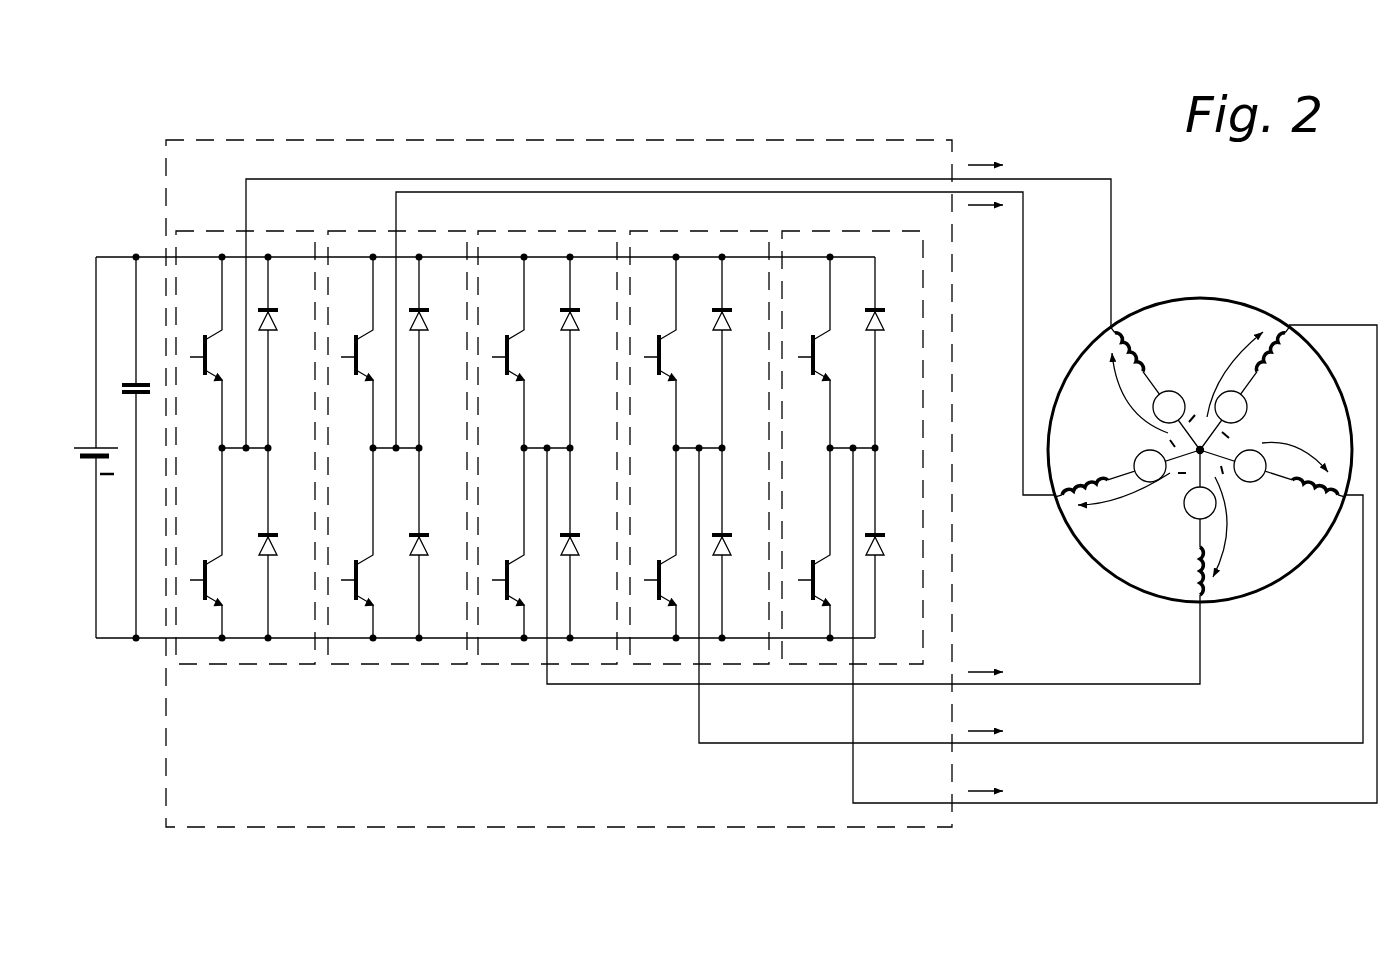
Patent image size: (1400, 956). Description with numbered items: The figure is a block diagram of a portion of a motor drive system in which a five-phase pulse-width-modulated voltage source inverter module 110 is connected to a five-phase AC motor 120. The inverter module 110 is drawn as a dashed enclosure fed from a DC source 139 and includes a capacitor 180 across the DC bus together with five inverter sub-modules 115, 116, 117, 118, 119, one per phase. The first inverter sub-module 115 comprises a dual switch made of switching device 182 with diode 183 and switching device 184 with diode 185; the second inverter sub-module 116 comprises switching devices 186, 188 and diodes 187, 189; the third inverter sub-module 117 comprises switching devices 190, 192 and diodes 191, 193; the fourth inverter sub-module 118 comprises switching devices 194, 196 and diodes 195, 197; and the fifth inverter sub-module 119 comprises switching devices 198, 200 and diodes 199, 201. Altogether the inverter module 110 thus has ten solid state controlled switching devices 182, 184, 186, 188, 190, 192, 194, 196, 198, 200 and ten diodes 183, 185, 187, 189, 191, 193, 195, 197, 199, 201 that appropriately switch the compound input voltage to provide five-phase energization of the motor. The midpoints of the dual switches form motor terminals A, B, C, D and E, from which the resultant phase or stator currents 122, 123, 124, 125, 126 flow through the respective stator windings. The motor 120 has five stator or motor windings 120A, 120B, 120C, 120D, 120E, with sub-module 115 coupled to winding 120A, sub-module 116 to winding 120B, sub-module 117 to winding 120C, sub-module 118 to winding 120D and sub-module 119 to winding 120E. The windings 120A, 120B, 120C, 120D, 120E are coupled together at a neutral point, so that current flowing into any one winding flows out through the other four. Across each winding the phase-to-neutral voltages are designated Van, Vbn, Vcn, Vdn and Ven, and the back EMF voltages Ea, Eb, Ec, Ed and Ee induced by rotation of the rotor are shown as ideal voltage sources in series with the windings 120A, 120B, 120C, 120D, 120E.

The five-phase PWM inverter module 110 is at (556, 140).
The first inverter sub-module 115 is at (273, 231).
The second inverter sub-module 116 is at (425, 231).
The third inverter sub-module 117 is at (575, 231).
The fourth inverter sub-module 118 is at (727, 231).
The fifth inverter sub-module 119 is at (879, 231).
The five-phase AC motor 120 is at (1232, 299).
The motor winding A 120A is at (1135, 342).
The motor winding B 120B is at (1085, 468).
The motor winding C 120C is at (1186, 572).
The motor winding D 120D is at (1298, 500).
The motor winding E 120E is at (1275, 365).
The phase current Ia 122 is at (1066, 179).
The phase current Ib 123 is at (1023, 272).
The phase current Ic 124 is at (1064, 684).
The phase current Id 125 is at (1064, 743).
The phase current Ie 126 is at (1074, 803).
The DC voltage source 139 is at (80, 448).
The capacitor 180 is at (123, 385).
The solid state controlled switching device 182 is at (205, 337).
The diode 183 is at (282, 292).
The solid state controlled switching device 184 is at (205, 562).
The diode 185 is at (272, 535).
The solid state controlled switching device 186 is at (356, 337).
The diode 187 is at (433, 292).
The solid state controlled switching device 188 is at (356, 562).
The diode 189 is at (423, 535).
The solid state controlled switching device 190 is at (523, 358).
The diode 191 is at (564, 310).
The solid state controlled switching device 192 is at (507, 562).
The diode 193 is at (574, 535).
The solid state controlled switching device 194 is at (675, 358).
The diode 195 is at (716, 310).
The solid state controlled switching device 196 is at (659, 562).
The diode 197 is at (726, 535).
The solid state controlled switching device 198 is at (829, 358).
The diode 199 is at (869, 310).
The solid state controlled switching device 200 is at (813, 562).
The diode 201 is at (880, 535).